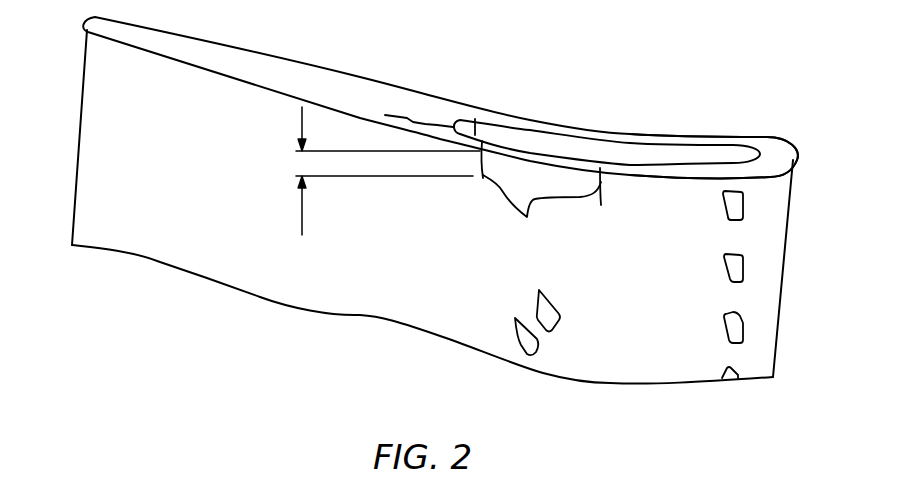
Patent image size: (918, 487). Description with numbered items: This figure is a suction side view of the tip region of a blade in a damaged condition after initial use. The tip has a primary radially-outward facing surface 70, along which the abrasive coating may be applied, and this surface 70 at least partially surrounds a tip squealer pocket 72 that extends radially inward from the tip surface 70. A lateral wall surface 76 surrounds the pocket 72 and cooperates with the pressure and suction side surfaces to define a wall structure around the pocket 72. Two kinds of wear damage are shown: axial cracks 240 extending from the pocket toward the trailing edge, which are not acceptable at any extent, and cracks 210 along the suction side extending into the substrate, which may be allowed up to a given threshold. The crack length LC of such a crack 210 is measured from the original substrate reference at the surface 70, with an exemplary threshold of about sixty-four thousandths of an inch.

The primary radially-outward facing surface 70 is at (400, 100).
The cracks 240 is at (433, 120).
The lateral wall surface 76 is at (568, 140).
The tip squealer pocket 72 is at (643, 160).
The cracks 210 is at (541, 197).
The crack length LC is at (385, 187).